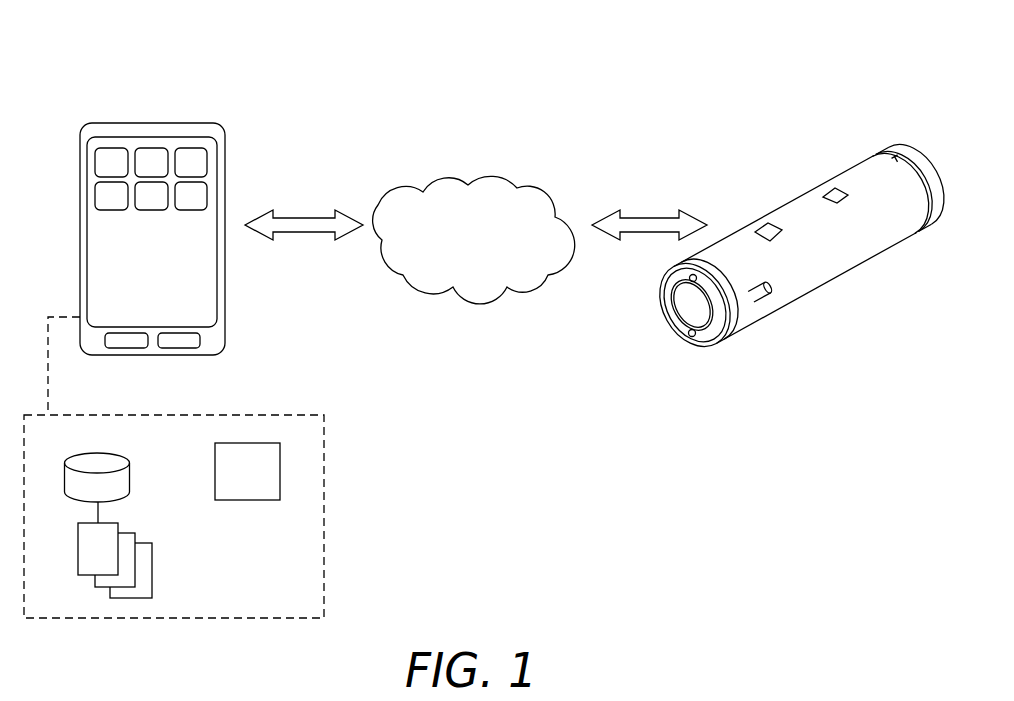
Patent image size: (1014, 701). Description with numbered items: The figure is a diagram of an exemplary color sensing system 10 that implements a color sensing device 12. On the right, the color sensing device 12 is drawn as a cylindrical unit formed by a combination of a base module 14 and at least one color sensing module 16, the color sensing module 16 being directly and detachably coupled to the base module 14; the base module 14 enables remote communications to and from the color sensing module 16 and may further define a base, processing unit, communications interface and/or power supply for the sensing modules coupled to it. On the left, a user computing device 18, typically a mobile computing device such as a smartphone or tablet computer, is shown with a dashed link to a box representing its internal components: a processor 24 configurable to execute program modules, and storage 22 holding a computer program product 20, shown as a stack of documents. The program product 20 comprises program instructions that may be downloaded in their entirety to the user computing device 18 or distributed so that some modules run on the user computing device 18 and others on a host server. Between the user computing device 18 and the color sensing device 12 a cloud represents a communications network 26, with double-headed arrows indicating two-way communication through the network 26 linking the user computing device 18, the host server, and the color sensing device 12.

The color sensing system 10 is at (238, 54).
The color sensing device 12 is at (780, 201).
The base module 14 is at (833, 262).
The color sensing module 16 is at (730, 328).
The user computing device 18 is at (121, 113).
The computer program product 20 is at (108, 523).
The storage 22 is at (107, 455).
The processor 24 is at (242, 500).
The communications network 26 is at (442, 151).